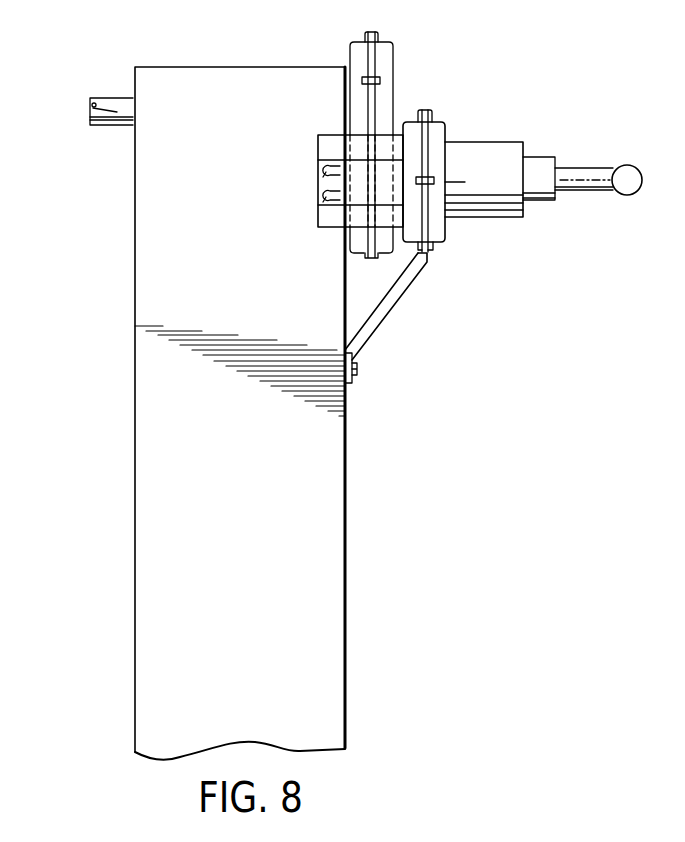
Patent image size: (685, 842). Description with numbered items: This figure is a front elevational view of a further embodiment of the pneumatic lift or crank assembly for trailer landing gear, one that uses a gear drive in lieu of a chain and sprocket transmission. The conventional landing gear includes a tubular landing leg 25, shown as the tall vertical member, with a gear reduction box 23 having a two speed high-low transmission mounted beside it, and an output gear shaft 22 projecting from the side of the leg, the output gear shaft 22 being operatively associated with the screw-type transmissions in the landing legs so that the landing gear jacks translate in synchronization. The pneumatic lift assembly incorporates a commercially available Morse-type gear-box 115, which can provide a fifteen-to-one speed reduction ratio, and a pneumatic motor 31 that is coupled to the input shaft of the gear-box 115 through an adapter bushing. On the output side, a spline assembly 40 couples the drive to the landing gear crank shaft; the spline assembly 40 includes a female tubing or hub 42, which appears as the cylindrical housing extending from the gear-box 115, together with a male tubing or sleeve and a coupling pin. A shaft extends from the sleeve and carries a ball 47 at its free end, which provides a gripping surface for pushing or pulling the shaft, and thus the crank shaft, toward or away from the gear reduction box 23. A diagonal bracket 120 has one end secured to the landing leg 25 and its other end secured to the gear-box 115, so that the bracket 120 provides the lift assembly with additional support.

The output gear shaft 22 is at (100, 98).
The gear reduction box 23 is at (395, 52).
The tubular landing leg 25 is at (255, 507).
The pneumatic motor 31 is at (318, 227).
The spline assembly 40 is at (592, 224).
The female tubing or hub 42 is at (505, 140).
The ball 47 is at (625, 165).
The gear-box 115 is at (437, 121).
The bracket 120 is at (391, 292).